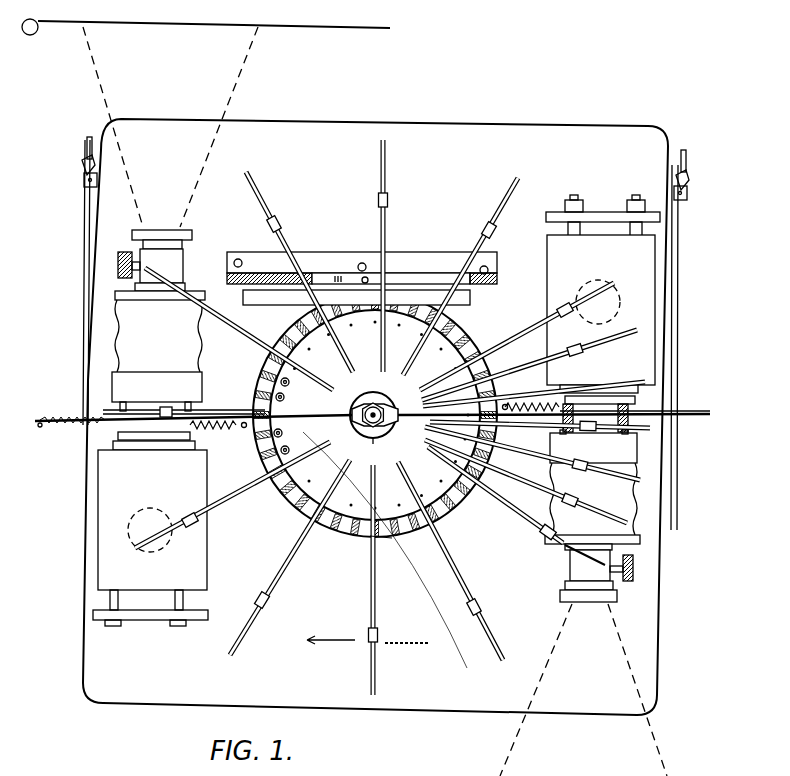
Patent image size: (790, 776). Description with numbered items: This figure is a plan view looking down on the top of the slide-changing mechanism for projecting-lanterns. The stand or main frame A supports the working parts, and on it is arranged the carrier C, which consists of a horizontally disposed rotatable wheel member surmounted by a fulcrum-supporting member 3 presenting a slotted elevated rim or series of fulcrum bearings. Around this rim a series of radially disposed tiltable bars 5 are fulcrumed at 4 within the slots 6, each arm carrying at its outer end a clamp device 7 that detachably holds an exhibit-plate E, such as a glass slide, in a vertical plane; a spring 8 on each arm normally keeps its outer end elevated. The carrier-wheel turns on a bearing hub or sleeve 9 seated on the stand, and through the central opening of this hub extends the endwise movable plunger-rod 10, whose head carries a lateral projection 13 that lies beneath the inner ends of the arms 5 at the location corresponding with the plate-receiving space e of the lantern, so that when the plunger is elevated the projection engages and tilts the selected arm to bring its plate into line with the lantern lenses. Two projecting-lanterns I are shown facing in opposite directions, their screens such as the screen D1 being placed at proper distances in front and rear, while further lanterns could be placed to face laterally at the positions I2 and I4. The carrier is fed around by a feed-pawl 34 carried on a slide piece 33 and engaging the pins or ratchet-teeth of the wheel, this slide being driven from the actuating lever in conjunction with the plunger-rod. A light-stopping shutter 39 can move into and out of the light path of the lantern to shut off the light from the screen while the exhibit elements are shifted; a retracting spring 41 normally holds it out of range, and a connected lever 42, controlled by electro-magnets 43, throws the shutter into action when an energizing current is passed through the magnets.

The stand or main frame A is at (463, 126).
The carrier C is at (375, 435).
The picture screen D1 is at (206, 32).
The exhibit-plate E is at (270, 180).
The plate-receiving space e is at (112, 388).
The projecting-lantern I is at (376, 410).
The lateral lantern position I2 is at (368, 639).
The lateral lantern position I4 is at (344, 162).
The fulcrum-supporting member 3 is at (286, 504).
The fulcrum 4 is at (380, 540).
The tiltable bars 5 is at (381, 230).
The slots 6 is at (375, 435).
The clamp device 7 is at (494, 228).
The spring 8 is at (282, 433).
The bearing hub or sleeve 9 is at (373, 440).
The plunger-rod 10 is at (366, 409).
The lateral projection 13 is at (340, 412).
The slide piece 33 is at (410, 282).
The feed-pawl 34 is at (365, 278).
The light-stopping shutter 39 is at (44, 420).
The retracting spring 41 is at (232, 428).
The lever 42 is at (85, 205).
The electro-magnets 43 is at (87, 144).